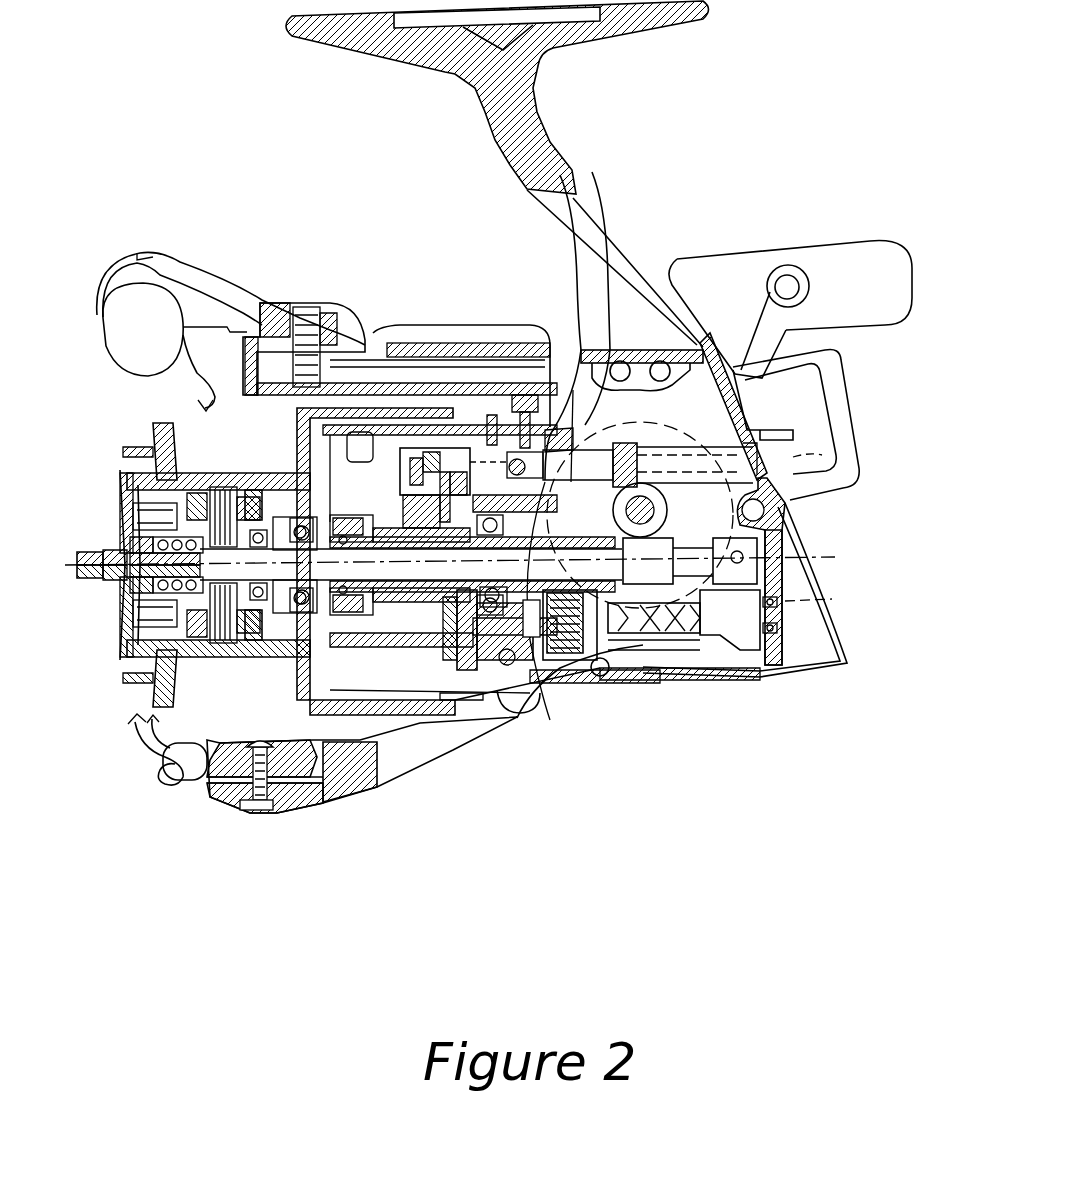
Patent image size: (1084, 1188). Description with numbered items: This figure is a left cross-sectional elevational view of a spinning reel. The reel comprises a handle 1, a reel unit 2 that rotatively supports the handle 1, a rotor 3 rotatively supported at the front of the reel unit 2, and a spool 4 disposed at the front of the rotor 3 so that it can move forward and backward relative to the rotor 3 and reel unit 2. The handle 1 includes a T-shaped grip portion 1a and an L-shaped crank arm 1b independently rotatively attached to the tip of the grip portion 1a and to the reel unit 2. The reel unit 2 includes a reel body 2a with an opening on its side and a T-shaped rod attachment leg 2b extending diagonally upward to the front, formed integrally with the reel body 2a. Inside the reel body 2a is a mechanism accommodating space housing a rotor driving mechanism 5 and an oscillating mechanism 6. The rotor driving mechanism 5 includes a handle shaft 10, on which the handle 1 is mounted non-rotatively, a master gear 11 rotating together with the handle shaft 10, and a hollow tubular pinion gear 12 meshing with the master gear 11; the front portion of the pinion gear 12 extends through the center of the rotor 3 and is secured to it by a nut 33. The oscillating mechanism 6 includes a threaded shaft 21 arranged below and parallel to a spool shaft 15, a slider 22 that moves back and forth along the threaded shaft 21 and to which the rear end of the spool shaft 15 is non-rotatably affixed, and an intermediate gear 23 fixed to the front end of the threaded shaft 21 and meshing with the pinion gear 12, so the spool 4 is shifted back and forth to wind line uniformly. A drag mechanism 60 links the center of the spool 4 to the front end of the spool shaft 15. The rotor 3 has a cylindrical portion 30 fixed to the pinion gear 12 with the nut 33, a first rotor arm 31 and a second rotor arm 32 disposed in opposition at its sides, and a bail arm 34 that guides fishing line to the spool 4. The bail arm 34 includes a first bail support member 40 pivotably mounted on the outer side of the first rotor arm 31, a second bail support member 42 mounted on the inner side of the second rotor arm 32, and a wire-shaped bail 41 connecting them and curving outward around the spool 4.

The handle 1 is at (757, 296).
The grip portion 1a is at (807, 243).
The crank arm 1b is at (722, 338).
The reel unit 2 is at (833, 553).
The reel body 2a is at (817, 510).
The rod attachment leg 2b is at (596, 196).
The rotor 3 is at (420, 723).
The spool 4 is at (223, 667).
The rotor driving mechanism 5 is at (677, 493).
The oscillating mechanism 6 is at (667, 652).
The handle shaft 10 is at (620, 440).
The master gear 11 is at (830, 603).
The pinion gear 12 is at (543, 683).
The spool shaft 15 is at (730, 653).
The threaded shaft 21 is at (683, 640).
The slider 22 is at (777, 640).
The intermediate gear 23 is at (570, 653).
The cylindrical portion 30 is at (443, 707).
The first rotor arm 31 is at (347, 340).
The second rotor arm 32 is at (333, 797).
The nut 33 is at (350, 491).
The bail arm 34 is at (155, 385).
The first bail support member 40 is at (222, 287).
The bail 41 is at (147, 753).
The second bail support member 42 is at (200, 773).
The drag mechanism 60 is at (253, 485).